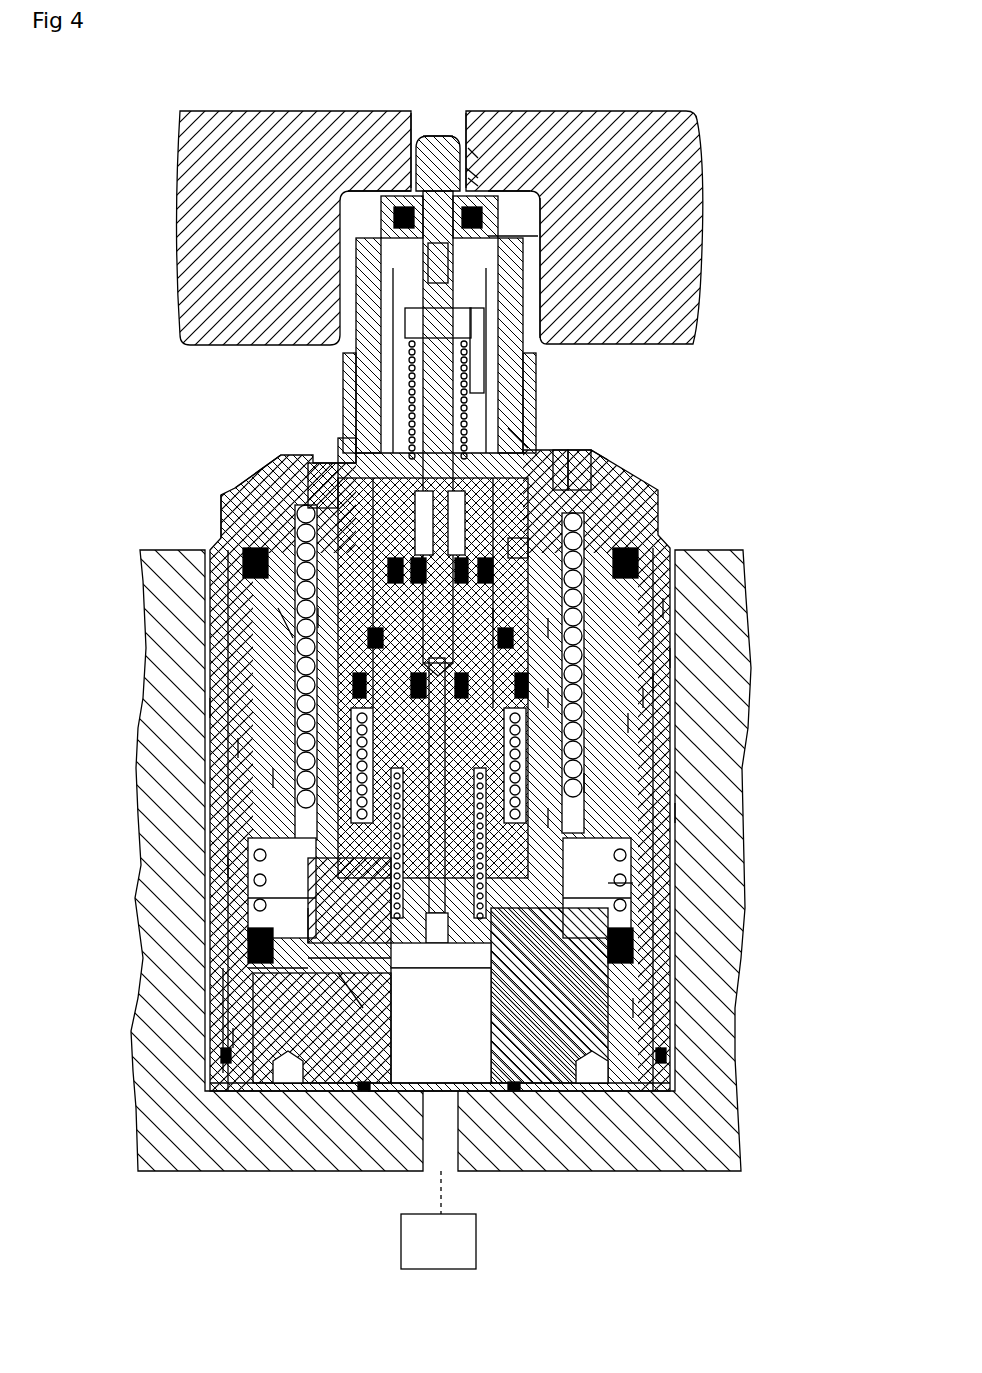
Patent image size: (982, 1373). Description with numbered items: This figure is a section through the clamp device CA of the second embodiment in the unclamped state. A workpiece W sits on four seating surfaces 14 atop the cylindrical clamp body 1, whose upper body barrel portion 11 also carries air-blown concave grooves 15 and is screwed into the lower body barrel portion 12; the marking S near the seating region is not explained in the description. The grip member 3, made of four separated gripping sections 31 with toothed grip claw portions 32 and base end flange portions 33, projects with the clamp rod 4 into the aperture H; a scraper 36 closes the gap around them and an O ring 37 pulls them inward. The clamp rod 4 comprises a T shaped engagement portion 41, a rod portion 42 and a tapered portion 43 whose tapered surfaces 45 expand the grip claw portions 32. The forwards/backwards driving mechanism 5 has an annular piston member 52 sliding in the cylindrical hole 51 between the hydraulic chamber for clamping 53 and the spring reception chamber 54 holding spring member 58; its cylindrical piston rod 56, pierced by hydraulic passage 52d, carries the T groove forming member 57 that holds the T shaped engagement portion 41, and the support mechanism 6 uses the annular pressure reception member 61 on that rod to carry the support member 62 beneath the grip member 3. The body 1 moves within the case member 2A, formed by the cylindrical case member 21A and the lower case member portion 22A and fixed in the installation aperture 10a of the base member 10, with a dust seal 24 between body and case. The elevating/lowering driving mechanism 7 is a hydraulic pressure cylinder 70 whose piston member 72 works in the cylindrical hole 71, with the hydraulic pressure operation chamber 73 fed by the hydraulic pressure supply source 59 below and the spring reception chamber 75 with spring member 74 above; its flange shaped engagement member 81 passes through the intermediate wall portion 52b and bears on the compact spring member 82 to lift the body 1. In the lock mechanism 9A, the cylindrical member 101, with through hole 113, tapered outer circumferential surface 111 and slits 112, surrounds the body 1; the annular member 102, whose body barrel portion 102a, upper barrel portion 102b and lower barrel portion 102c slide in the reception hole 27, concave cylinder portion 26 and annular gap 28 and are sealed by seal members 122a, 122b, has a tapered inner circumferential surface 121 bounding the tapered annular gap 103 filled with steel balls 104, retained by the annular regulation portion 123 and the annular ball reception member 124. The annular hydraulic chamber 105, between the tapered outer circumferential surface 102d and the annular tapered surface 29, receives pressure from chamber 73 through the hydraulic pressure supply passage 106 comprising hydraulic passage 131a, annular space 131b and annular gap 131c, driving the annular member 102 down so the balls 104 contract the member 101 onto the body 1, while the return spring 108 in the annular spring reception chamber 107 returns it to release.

The cylindrical clamp body 1 is at (540, 182).
The case member 2A is at (643, 450).
The grip member 3 is at (476, 156).
The clamp rod 4 is at (452, 112).
The forwards/backwards driving mechanism 5 is at (510, 822).
The support mechanism 6 is at (290, 641).
The elevating/lowering driving mechanism 7 is at (370, 1086).
The lock mechanism 9A is at (202, 981).
The base member 10 is at (738, 599).
The installation aperture 10a is at (672, 809).
The upper body barrel portion 11 is at (505, 291).
The lower body barrel portion 12 is at (560, 691).
The seating surfaces 14 is at (392, 188).
The concave grooves 15 is at (370, 200).
The cylindrical case member 21A is at (655, 511).
The lower case member portion 22A is at (635, 1001).
The dust seal 24 is at (552, 440).
The concave cylinder portion 26 is at (580, 470).
The reception hole 27 is at (235, 741).
The annular gap 28 is at (240, 931).
The annular tapered surface 29 is at (628, 561).
The separated gripping sections 31 is at (466, 176).
The grip claw portions 32 is at (476, 149).
The base end flange portions 33 is at (530, 226).
The scraper 36 is at (405, 195).
The O ring 37 is at (378, 216).
The T shaped engagement portion 41 is at (438, 383).
The rod portion 42 is at (434, 263).
The tapered portion 43 is at (438, 163).
The tapered surfaces 45 is at (440, 126).
The cylindrical hole 51 is at (548, 811).
The annular piston member 52 is at (510, 651).
The intermediate wall portion 52b is at (502, 422).
The hydraulic passage 52d is at (490, 606).
The hydraulic chamber for clamping 53 is at (548, 621).
The spring reception chamber 54 is at (572, 741).
The cylindrical piston rod 56 is at (521, 541).
The T groove forming member 57 is at (472, 362).
The spring member 58 is at (578, 776).
The hydraulic pressure supply source 59 is at (468, 1239).
The annular pressure reception member 61 is at (310, 611).
The support member 62 is at (355, 346).
The hydraulic pressure cylinder 70 is at (395, 983).
The cylindrical hole 71 is at (480, 961).
The piston member 72 is at (340, 1021).
The hydraulic pressure operation chamber 73 is at (455, 1032).
The spring member 74 is at (375, 871).
The spring reception chamber 75 is at (368, 840).
The flange shaped engagement member 81 is at (332, 431).
The compact spring member 82 is at (337, 401).
The cylindrical member 101 is at (577, 444).
The annular member 102 is at (205, 656).
The body barrel portion 102a is at (205, 701).
The upper barrel portion 102b is at (260, 521).
The lower barrel portion 102c is at (220, 861).
The tapered outer circumferential surface 102d is at (668, 651).
The tapered annular gap 103 is at (270, 481).
The steel balls 104 is at (280, 621).
The annular hydraulic chamber 105 is at (660, 601).
The hydraulic pressure supply passage 106 is at (225, 1031).
The annular spring reception chamber 107 is at (630, 836).
The return spring 108 is at (630, 881).
The tapered outer circumferential surface 111 is at (640, 691).
The slits 112 is at (648, 676).
The through hole 113 is at (625, 716).
The tapered inner circumferential surface 121 is at (270, 771).
The seal member 122a is at (236, 556).
The seal member 122b is at (255, 951).
The annular regulation portion 123 is at (300, 472).
The annular ball reception member 124 is at (265, 826).
The hydraulic passage 131a is at (310, 991).
The annular space 131b is at (292, 951).
The annular gap 131c is at (292, 916).
The workpiece W is at (694, 149).
The aperture H is at (403, 105).
The seat surface S is at (355, 190).
The clamp device CA is at (549, 104).